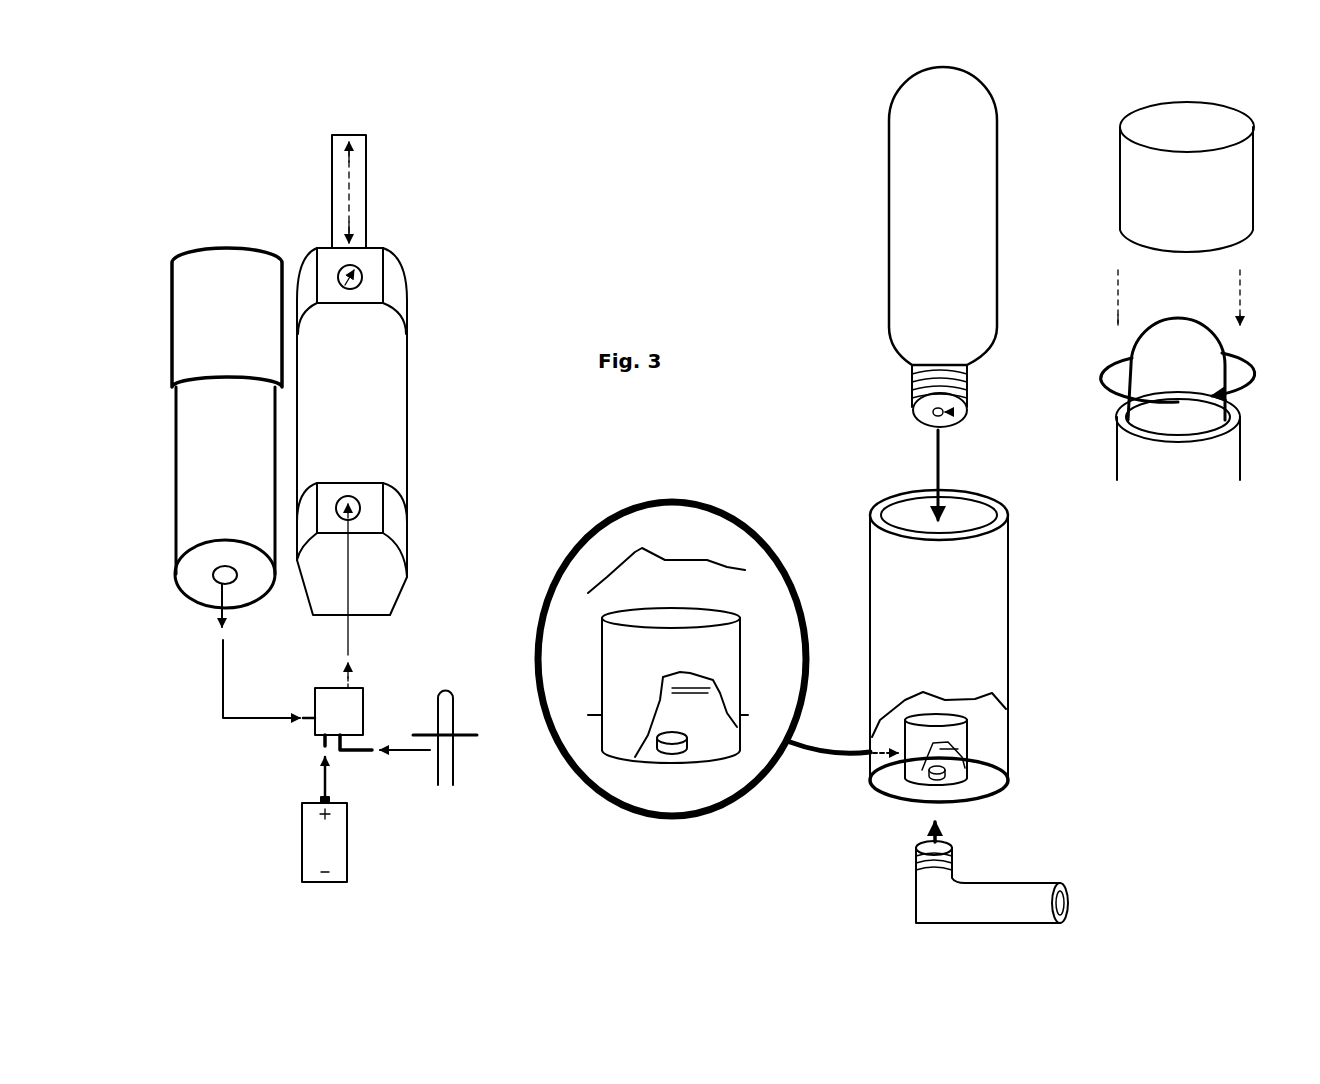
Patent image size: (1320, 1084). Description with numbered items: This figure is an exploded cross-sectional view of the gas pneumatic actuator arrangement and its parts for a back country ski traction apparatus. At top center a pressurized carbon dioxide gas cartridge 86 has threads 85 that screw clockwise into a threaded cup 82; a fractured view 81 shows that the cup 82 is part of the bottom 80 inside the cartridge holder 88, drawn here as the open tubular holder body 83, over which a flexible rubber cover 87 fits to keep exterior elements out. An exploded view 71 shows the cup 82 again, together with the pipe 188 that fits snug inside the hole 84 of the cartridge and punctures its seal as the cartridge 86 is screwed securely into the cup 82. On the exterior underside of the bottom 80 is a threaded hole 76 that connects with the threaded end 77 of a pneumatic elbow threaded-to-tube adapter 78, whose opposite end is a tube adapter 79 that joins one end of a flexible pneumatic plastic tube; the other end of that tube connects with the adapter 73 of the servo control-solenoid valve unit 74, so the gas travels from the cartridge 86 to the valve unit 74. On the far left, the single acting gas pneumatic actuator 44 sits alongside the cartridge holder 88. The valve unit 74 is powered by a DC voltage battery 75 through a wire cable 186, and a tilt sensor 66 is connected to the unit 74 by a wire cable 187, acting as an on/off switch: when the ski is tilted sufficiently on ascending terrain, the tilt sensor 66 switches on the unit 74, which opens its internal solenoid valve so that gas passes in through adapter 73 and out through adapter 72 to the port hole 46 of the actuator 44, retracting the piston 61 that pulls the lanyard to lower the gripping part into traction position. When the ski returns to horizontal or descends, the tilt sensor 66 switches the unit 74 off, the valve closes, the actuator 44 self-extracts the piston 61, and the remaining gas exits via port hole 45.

The piston 61 is at (332, 176).
The flexible rubber cover 87 is at (192, 268).
The port hole 45 is at (355, 268).
The single acting gas pneumatic actuator 44 is at (398, 397).
The port hole 46 is at (360, 497).
The threaded hole 76 is at (248, 582).
The cartridge holder 88 is at (268, 543).
The adapter 73 is at (310, 715).
The adapter 72 is at (352, 683).
The servo control-solenoid valve unit 74 is at (339, 711).
The tilt sensor 66 is at (448, 720).
The wire cable 186 is at (314, 745).
The wire cable 187 is at (357, 757).
The DC voltage battery 75 is at (340, 833).
The exploded view 71 is at (552, 668).
The pipe 188 is at (695, 743).
The pressurized carbon dioxide gas cartridge 86 is at (1143, 350).
The threads 85 is at (974, 400).
The hole 84 is at (960, 418).
The cartridge chamber 83 is at (888, 503).
The cup 82 is at (945, 712).
The fractured view 81 is at (906, 698).
The bottom 80 is at (998, 799).
The threaded end 77 is at (915, 850).
The pneumatic elbow threaded-to-tube adapter 78 is at (972, 893).
The tube adapter 79 is at (1072, 905).